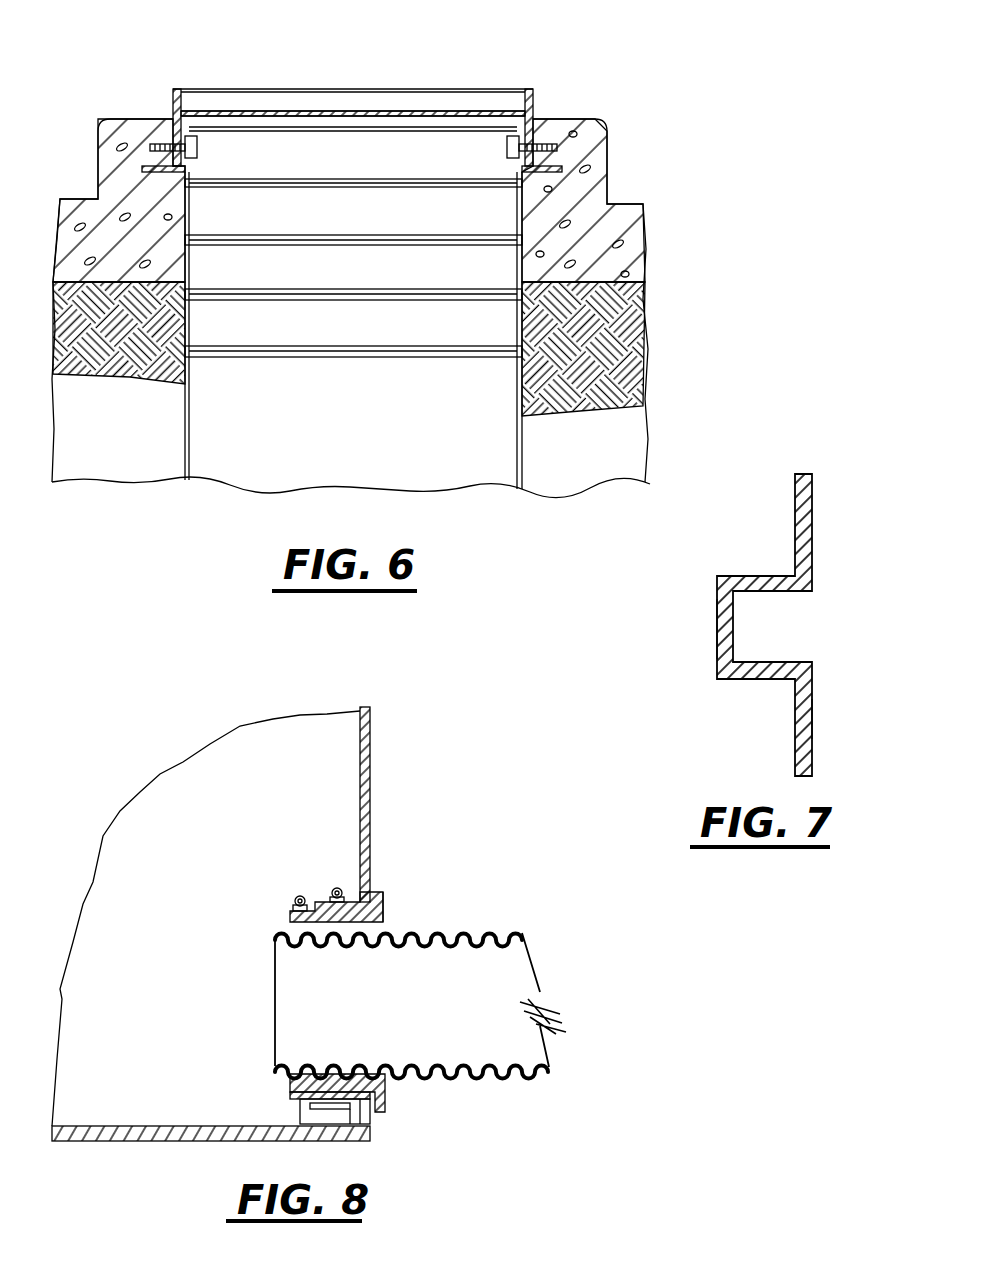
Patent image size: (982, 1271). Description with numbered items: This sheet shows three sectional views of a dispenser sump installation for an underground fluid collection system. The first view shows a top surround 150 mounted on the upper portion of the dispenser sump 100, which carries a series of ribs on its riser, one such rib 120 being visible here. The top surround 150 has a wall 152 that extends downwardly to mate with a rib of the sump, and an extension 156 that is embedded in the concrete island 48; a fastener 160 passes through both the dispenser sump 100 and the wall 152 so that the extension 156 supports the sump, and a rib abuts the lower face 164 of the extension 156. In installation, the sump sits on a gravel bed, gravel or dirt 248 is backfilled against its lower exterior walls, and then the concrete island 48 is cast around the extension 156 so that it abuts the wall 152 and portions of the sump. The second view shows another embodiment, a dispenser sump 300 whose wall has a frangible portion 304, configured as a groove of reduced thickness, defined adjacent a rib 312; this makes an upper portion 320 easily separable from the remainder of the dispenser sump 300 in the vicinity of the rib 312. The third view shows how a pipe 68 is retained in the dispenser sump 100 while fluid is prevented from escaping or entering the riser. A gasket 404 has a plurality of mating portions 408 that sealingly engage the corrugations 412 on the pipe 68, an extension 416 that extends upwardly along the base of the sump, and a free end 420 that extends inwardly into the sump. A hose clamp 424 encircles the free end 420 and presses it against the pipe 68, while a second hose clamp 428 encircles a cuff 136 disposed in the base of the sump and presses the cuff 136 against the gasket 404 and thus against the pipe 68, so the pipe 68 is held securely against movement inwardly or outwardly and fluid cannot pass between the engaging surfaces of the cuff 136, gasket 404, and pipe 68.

In FIG. 6, the concrete island 48 is at (98, 126).
In FIG. 6, the dispenser sump 100 is at (246, 460).
In FIG. 8, the dispenser sump 100 is at (385, 743).
In FIG. 6, the rib 120 is at (527, 200).
In FIG. 8, the cuff 136 is at (372, 1132).
In FIG. 6, the top surround 150 is at (346, 106).
In FIG. 6, the wall 152 is at (210, 117).
In FIG. 6, the extension 156 is at (187, 205).
In FIG. 6, the fastener 160 is at (198, 150).
In FIG. 6, the lower face 164 is at (187, 207).
In FIG. 6, the gravel or dirt 248 is at (131, 445).
In FIG. 7, the dispenser sump 300 is at (751, 617).
In FIG. 7, the frangible portion 304 is at (797, 695).
In FIG. 7, the rib 312 is at (717, 630).
In FIG. 7, the upper portion 320 is at (795, 500).
In FIG. 8, the pipe 68 is at (470, 930).
In FIG. 8, the gasket 404 is at (402, 1102).
In FIG. 8, the mating portion 408 is at (330, 1100).
In FIG. 8, the corrugation 412 is at (430, 930).
In FIG. 8, the extension 416 is at (385, 912).
In FIG. 8, the free end 420 is at (290, 917).
In FIG. 8, the hose clamp 424 is at (297, 897).
In FIG. 8, the hose clamp 428 is at (337, 888).